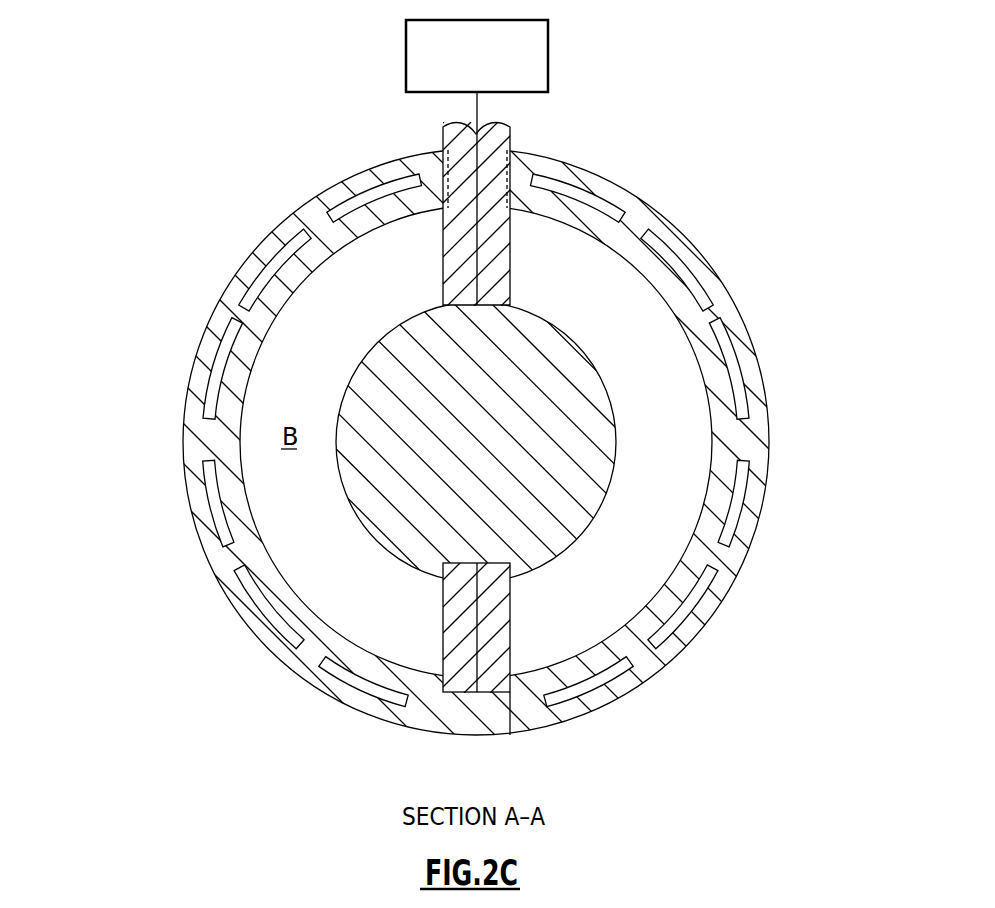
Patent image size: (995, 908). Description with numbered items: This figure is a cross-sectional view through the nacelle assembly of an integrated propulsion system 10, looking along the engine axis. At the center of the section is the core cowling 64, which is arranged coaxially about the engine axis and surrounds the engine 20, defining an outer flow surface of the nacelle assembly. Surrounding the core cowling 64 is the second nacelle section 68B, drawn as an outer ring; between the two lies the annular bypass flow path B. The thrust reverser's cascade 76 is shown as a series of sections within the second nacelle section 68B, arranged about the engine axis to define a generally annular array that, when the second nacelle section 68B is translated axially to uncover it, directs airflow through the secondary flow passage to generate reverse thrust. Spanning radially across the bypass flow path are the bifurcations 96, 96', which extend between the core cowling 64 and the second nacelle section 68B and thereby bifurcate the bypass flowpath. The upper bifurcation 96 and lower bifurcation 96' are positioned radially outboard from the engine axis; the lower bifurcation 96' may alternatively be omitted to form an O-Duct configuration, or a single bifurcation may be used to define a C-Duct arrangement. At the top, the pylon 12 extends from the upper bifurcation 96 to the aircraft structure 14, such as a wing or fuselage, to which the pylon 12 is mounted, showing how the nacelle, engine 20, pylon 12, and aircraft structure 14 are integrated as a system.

The integrated propulsion system 10 is at (105, 90).
The engine 20 is at (220, 176).
The aircraft structure 14 is at (548, 52).
The pylon 12 is at (515, 132).
The bifurcation 96 is at (510, 199).
The lower bifurcation 96' is at (514, 649).
The core cowling 64 is at (627, 426).
The second nacelle section 68B is at (750, 312).
The cascade 76 is at (302, 231).